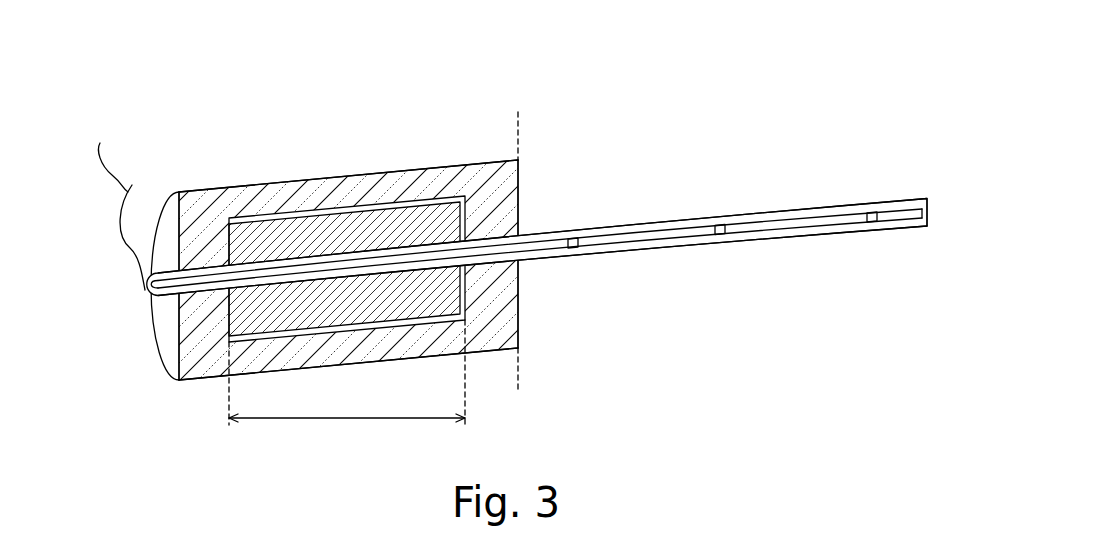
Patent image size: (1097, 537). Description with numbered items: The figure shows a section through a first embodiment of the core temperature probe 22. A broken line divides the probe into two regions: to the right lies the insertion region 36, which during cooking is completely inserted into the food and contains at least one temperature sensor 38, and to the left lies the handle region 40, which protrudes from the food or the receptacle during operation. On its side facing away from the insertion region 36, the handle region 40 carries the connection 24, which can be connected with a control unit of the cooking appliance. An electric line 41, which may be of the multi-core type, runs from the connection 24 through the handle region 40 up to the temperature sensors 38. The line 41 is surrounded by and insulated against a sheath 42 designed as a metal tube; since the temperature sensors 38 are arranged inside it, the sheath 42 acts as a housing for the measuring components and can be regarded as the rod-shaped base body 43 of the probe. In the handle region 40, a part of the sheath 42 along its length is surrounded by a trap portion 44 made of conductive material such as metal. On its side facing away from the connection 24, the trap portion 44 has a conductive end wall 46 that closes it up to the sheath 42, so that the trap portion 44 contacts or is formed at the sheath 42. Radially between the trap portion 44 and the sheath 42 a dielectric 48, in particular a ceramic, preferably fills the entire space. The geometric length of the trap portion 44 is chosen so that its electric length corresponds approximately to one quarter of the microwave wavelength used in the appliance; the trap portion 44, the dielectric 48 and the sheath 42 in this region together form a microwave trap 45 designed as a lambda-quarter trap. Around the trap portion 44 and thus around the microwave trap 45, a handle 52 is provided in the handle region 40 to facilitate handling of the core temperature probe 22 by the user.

The core temperature probe 22 is at (292, 108).
The handle region 40 is at (375, 117).
The insertion region 36 is at (828, 103).
The temperature sensor 38 is at (573, 240).
The connection 24 is at (132, 185).
The handle 52 is at (247, 200).
The dielectric 48 is at (303, 228).
The trap portion 44 is at (400, 202).
The conductive end wall 46 is at (468, 213).
The electric line 41 is at (573, 238).
The rod-shaped base body 43 is at (505, 247).
The sheath 42 is at (502, 262).
The microwave trap 45 is at (360, 350).